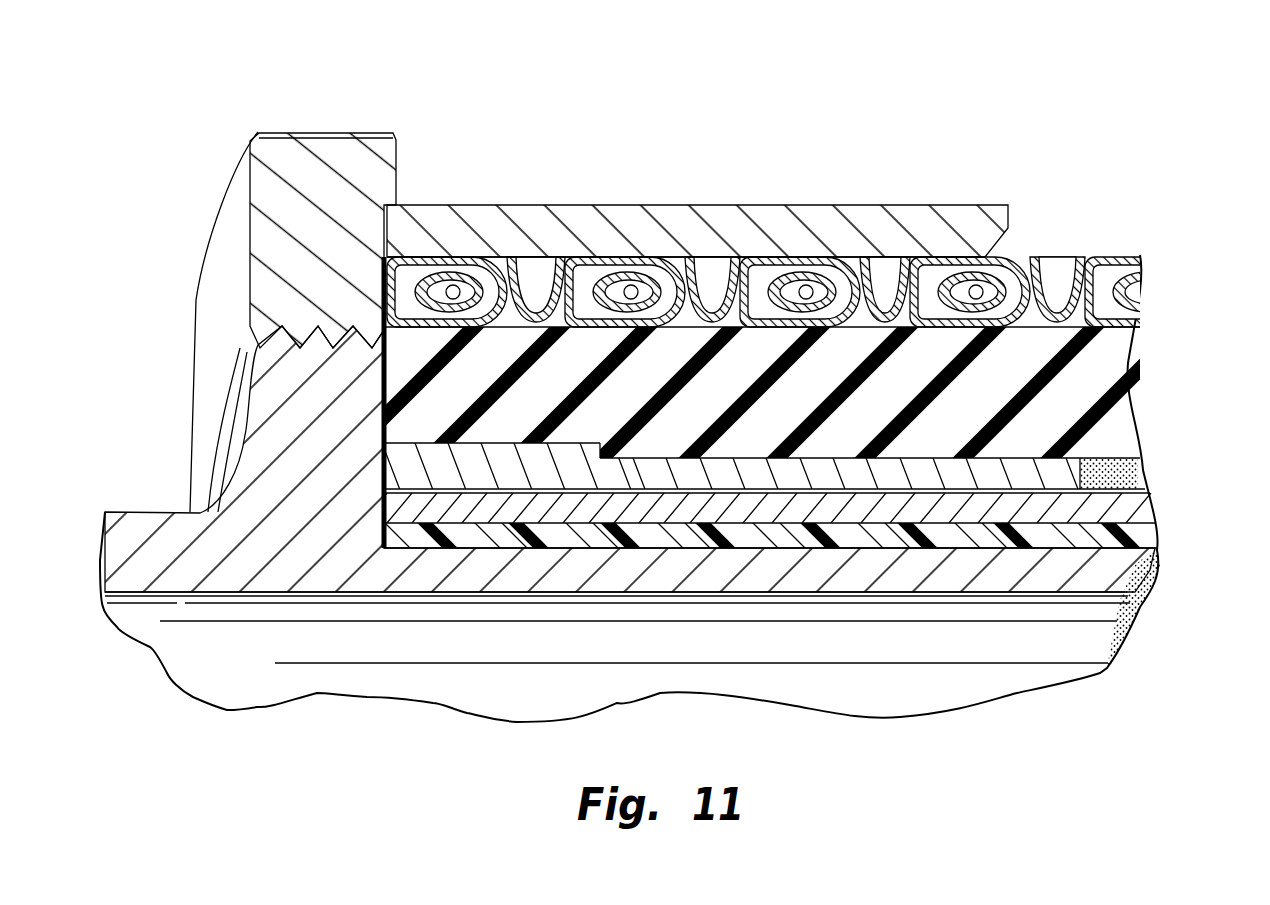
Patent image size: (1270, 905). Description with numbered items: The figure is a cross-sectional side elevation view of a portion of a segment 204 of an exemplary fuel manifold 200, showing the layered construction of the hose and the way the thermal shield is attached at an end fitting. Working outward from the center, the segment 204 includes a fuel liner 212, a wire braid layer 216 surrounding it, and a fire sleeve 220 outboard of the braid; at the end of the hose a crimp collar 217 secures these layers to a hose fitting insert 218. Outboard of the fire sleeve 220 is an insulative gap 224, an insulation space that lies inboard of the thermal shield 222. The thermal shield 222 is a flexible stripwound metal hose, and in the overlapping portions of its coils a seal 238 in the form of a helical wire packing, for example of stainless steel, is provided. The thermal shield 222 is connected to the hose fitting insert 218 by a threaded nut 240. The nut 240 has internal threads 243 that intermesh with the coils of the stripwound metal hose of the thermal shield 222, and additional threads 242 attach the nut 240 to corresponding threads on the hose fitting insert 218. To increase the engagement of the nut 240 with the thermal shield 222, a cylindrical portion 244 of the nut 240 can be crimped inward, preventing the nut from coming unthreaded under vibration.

The fuel manifold 200 is at (1062, 118).
The segment 204 is at (617, 627).
The fuel liner 212 is at (1143, 537).
The wire braid layer 216 is at (1117, 507).
The crimp collar 217 is at (1053, 473).
The hose fitting insert 218 is at (150, 511).
The fire sleeve 220 is at (1088, 388).
The thermal shield 222 is at (1057, 263).
The insulative gap 224 is at (517, 257).
The seal 238 is at (813, 277).
The threaded nut 240 is at (588, 172).
The additional threads 242 is at (243, 347).
The internal threads 243 is at (540, 262).
The cylindrical portion 244 is at (719, 205).